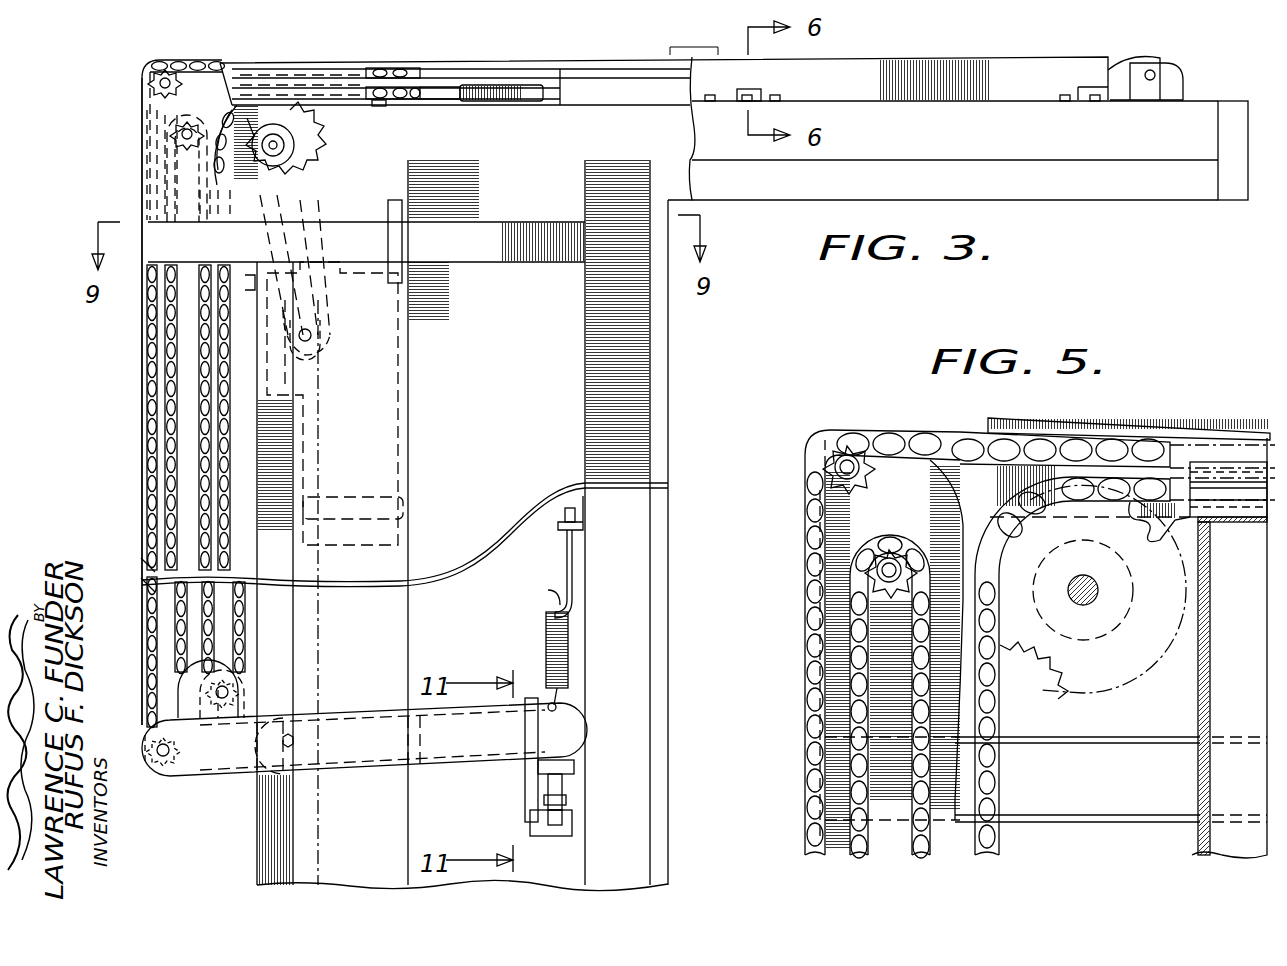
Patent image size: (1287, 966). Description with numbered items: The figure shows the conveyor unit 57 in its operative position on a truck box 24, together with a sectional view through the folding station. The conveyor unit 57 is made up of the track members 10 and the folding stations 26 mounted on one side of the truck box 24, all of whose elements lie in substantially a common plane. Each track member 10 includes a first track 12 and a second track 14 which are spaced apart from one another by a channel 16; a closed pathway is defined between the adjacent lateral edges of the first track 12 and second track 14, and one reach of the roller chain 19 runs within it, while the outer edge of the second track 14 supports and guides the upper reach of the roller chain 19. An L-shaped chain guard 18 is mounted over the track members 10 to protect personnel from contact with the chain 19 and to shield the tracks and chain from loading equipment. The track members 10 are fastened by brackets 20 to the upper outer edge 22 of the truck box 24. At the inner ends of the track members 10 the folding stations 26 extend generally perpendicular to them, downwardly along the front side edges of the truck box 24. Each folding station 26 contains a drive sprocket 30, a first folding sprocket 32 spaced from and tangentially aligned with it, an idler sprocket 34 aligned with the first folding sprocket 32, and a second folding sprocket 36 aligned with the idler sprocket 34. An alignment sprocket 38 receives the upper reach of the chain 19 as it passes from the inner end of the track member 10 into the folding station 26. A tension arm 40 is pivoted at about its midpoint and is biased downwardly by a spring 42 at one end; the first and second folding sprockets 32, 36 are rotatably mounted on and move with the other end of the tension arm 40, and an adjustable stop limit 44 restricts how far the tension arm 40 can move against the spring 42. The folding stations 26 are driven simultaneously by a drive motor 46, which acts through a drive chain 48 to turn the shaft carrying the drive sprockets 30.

In FIG. 3, the track members 10 is at (940, 62).
In FIG. 5, the track members 10 is at (1175, 420).
In FIG. 3, the first track 12 is at (445, 100).
In FIG. 5, the first track 12 is at (1247, 522).
In FIG. 3, the second track 14 is at (450, 80).
In FIG. 5, the second track 14 is at (1232, 465).
In FIG. 3, the channel 16 is at (545, 100).
In FIG. 3, the L-shaped chain guard 18 is at (614, 70).
In FIG. 5, the L-shaped chain guard 18 is at (1105, 420).
In FIG. 3, the roller chain 19 is at (140, 382).
In FIG. 5, the roller chain 19 is at (805, 797).
In FIG. 3, the brackets 20 is at (378, 106).
In FIG. 3, the upper outer edge 22 is at (1208, 100).
In FIG. 3, the truck box 24 is at (256, 858).
In FIG. 3, the folding stations 26 is at (125, 448).
In FIG. 3, the drive sprocket 30 is at (315, 165).
In FIG. 5, the drive sprocket 30 is at (1140, 650).
In FIG. 3, the first folding sprocket 32 is at (240, 672).
In FIG. 3, the idler sprocket 34 is at (180, 147).
In FIG. 5, the idler sprocket 34 is at (895, 555).
In FIG. 3, the second folding sprocket 36 is at (163, 780).
In FIG. 3, the alignment sprocket 38 is at (160, 89).
In FIG. 5, the alignment sprocket 38 is at (845, 450).
In FIG. 3, the tension arm 40 is at (478, 770).
In FIG. 3, the spring 42 is at (546, 628).
In FIG. 3, the adjustable stop limit 44 is at (565, 798).
In FIG. 3, the drive motor 46 is at (400, 449).
In FIG. 3, the drive chain 48 is at (330, 335).
In FIG. 3, the conveyor unit 57 is at (130, 68).